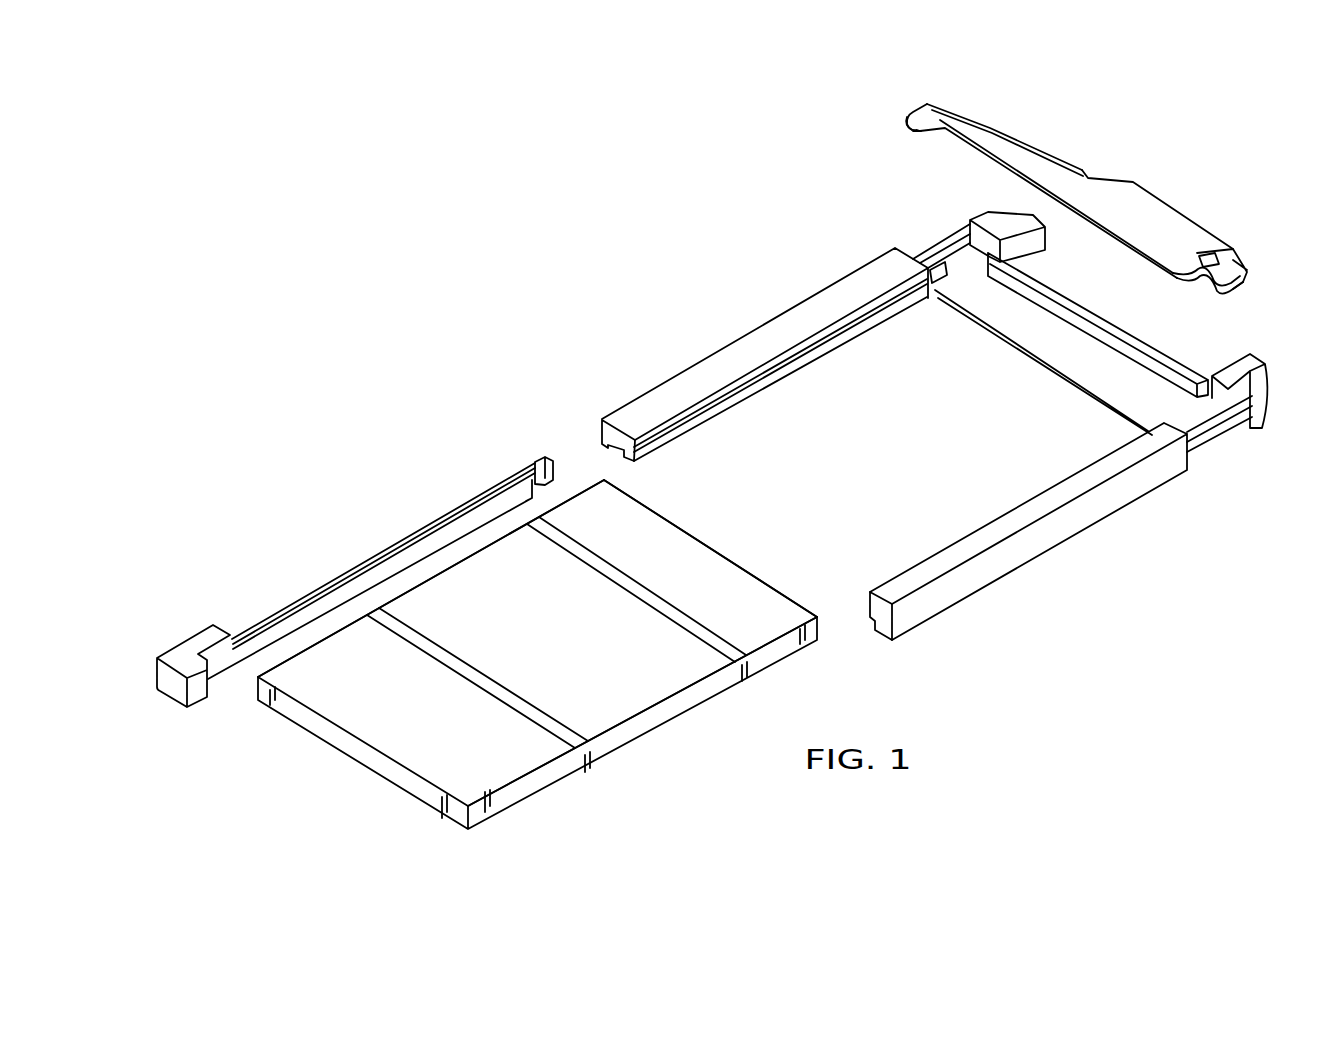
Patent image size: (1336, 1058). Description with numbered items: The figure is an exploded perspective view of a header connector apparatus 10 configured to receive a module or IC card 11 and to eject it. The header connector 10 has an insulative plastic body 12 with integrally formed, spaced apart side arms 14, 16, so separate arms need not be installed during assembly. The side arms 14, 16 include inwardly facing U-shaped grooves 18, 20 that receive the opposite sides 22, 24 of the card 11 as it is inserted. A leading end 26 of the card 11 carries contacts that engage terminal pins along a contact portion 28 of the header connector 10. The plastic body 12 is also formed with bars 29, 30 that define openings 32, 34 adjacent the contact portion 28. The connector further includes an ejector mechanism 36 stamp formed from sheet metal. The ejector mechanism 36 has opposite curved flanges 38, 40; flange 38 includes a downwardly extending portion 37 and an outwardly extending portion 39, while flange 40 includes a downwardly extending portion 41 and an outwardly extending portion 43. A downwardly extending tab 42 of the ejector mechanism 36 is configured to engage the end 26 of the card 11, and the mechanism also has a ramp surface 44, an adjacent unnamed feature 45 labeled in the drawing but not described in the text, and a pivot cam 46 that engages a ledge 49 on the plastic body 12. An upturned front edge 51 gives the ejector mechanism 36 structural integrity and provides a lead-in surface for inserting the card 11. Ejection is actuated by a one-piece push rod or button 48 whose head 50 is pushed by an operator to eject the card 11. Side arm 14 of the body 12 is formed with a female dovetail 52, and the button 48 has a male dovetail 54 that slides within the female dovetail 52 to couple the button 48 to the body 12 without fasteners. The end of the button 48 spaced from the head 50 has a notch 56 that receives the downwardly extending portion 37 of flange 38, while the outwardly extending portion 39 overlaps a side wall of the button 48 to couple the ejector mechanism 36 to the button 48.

The header connector apparatus 10 is at (720, 246).
The IC card 11 is at (630, 695).
The insulative plastic body 12 is at (773, 336).
The side arm 14 is at (722, 362).
The side arm 16 is at (1012, 531).
The U-shaped groove 18 is at (722, 397).
The U-shaped groove 20 is at (870, 612).
The side of card 22 is at (585, 490).
The side of card 24 is at (738, 675).
The leading end of card 26 is at (722, 553).
The contact portion 28 is at (1102, 337).
The bar 29 is at (940, 238).
The bar 30 is at (1216, 433).
The opening 32 is at (957, 240).
The opening 34 is at (1242, 398).
The ejector mechanism 36 is at (1079, 201).
The downwardly extending portion 37 is at (918, 134).
The curved flange 38 is at (905, 118).
The outwardly extending portion 39 is at (902, 128).
The curved flange 40 is at (1248, 278).
The downwardly extending portion 41 is at (1245, 258).
The downwardly extending tab 42 is at (1212, 249).
The outwardly extending portion 43 is at (1222, 300).
The ramp surface 44 is at (1028, 140).
The bracket fold 45 is at (978, 125).
The pivot cam 46 is at (1130, 183).
The push rod or button 48 is at (355, 555).
The ledge 49 is at (1112, 312).
The head 50 is at (174, 650).
The upturned front edge 51 is at (1115, 228).
The female dovetail 52 is at (606, 425).
The male dovetail 54 is at (426, 548).
The notch 56 is at (540, 460).